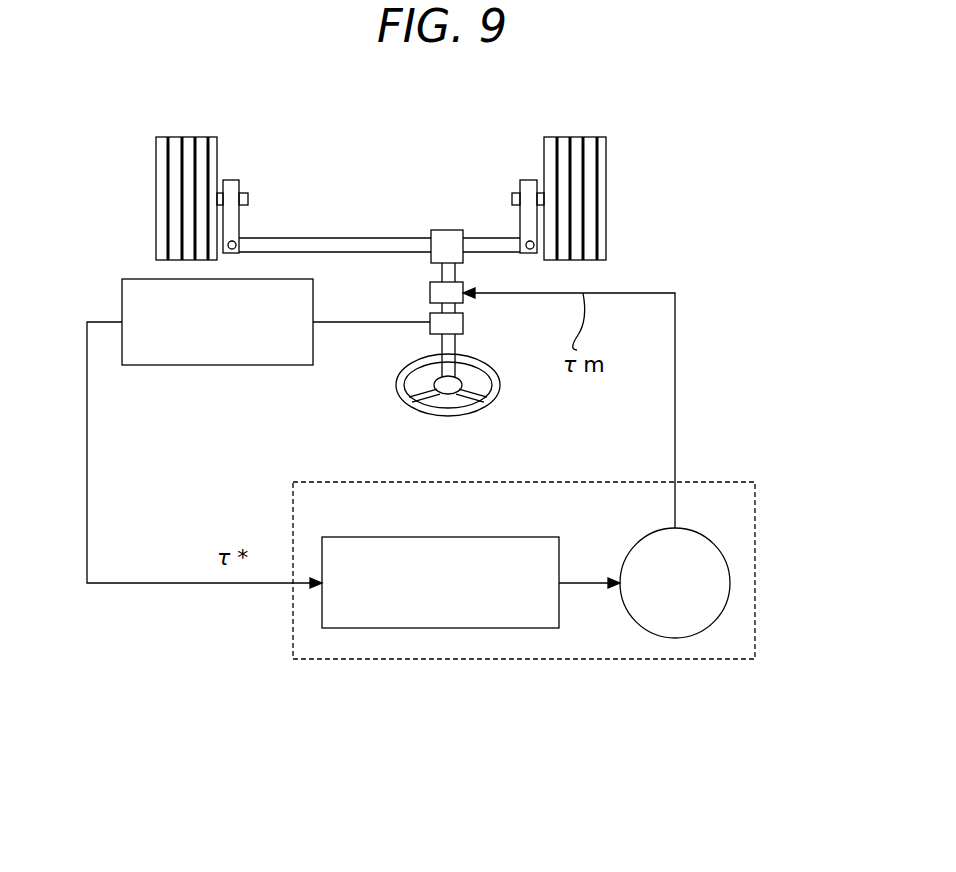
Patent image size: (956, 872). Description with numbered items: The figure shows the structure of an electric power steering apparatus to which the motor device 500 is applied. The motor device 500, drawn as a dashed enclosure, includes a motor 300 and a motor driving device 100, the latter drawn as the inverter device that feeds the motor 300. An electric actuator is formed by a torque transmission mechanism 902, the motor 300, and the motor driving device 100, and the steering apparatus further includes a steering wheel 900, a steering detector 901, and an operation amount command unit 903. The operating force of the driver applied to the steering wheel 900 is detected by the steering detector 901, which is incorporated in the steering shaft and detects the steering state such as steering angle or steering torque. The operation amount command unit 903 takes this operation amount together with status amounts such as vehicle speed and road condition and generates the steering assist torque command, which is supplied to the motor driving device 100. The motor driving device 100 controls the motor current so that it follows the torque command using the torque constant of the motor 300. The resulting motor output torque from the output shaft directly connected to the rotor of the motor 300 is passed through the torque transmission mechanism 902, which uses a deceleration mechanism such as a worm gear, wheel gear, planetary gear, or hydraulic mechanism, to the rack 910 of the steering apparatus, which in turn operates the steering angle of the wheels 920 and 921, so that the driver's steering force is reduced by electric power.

The wheel 920 is at (156, 198).
The wheel 921 is at (606, 197).
The rack 910 is at (343, 238).
The torque transmission mechanism 902 is at (430, 293).
The steering detector 901 is at (430, 336).
The steering wheel 900 is at (500, 395).
The operation amount command unit 903 is at (220, 365).
The motor driving device 100 is at (368, 518).
The motor device 500 is at (515, 659).
The motor 300 is at (730, 580).